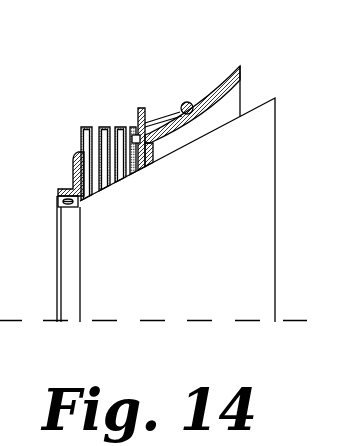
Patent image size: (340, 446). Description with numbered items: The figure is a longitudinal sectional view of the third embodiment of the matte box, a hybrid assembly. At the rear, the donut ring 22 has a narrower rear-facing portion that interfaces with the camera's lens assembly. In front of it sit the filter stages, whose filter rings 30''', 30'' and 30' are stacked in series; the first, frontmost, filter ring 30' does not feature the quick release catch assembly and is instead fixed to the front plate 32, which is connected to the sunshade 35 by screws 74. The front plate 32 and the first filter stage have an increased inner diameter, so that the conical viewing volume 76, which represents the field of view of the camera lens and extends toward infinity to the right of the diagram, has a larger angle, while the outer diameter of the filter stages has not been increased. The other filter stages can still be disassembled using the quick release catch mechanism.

The donut ring 22 is at (71, 182).
The first filter ring 30' is at (109, 127).
The filter ring 30'' is at (71, 134).
The filter ring 30''' is at (59, 158).
The front plate 32 is at (134, 112).
The sunshade 35 is at (236, 92).
The screw 74 is at (146, 133).
The conical viewing volume 76 is at (247, 187).